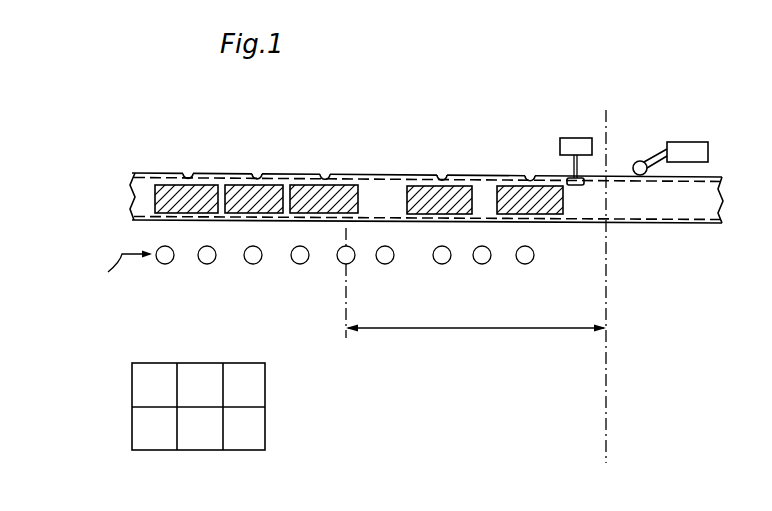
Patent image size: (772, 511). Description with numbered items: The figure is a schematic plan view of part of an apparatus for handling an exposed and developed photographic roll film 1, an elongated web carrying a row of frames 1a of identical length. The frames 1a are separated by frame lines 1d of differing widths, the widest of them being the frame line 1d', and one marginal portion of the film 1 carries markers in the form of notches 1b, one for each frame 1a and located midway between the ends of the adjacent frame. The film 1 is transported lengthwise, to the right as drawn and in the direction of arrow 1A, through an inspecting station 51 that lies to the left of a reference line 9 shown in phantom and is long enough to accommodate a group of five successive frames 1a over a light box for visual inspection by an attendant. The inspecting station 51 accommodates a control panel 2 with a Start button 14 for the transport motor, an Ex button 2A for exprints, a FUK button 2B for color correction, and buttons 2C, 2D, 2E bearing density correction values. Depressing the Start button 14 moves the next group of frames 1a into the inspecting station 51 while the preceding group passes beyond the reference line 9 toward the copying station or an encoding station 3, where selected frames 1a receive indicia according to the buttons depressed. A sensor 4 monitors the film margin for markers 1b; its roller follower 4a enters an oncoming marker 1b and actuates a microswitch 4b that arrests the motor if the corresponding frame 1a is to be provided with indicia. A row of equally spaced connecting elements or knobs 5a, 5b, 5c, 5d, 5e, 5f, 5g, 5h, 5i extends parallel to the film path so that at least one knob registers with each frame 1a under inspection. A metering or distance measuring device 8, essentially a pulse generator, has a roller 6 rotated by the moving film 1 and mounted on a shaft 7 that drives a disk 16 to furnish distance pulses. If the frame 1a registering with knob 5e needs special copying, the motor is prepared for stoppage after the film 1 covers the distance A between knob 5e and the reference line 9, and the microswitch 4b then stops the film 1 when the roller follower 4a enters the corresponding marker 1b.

The photographic roll film 1 is at (594, 195).
The film frames 1a is at (205, 195).
The markers (notches) 1b is at (187, 170).
The frame lines 1d is at (364, 139).
The wide frame line 1d' is at (396, 159).
The arrow indicating film transport direction 1A is at (125, 279).
The control panel 2 is at (179, 410).
The "Ex" button 2A is at (147, 363).
The "FUK" button 2B is at (200, 363).
The "−2" button 2C is at (250, 375).
The "2" button 2D is at (150, 445).
The "4" button 2E is at (196, 445).
The "Start" button 14 is at (243, 445).
The encoding station 3 is at (702, 260).
The sensor 4 is at (673, 82).
The roller follower 4a is at (638, 160).
The microswitch 4b is at (690, 142).
The connecting element (knob) 5a is at (165, 264).
The connecting element (knob) 5b is at (207, 264).
The connecting element (knob) 5c is at (253, 264).
The connecting element (knob) 5d is at (303, 264).
The connecting element (knob) 5e is at (350, 262).
The connecting element (knob) 5f is at (390, 262).
The connecting element (knob) 5g is at (442, 264).
The connecting element (knob) 5h is at (485, 264).
The connecting element (knob) 5i is at (530, 262).
The roller 6 is at (578, 188).
The shaft 7 is at (570, 178).
The metering or distance measuring device 8 is at (579, 126).
The disk 16 is at (568, 138).
The reference line 9 is at (609, 422).
The inspecting station 51 is at (393, 356).
The distance A is at (469, 339).